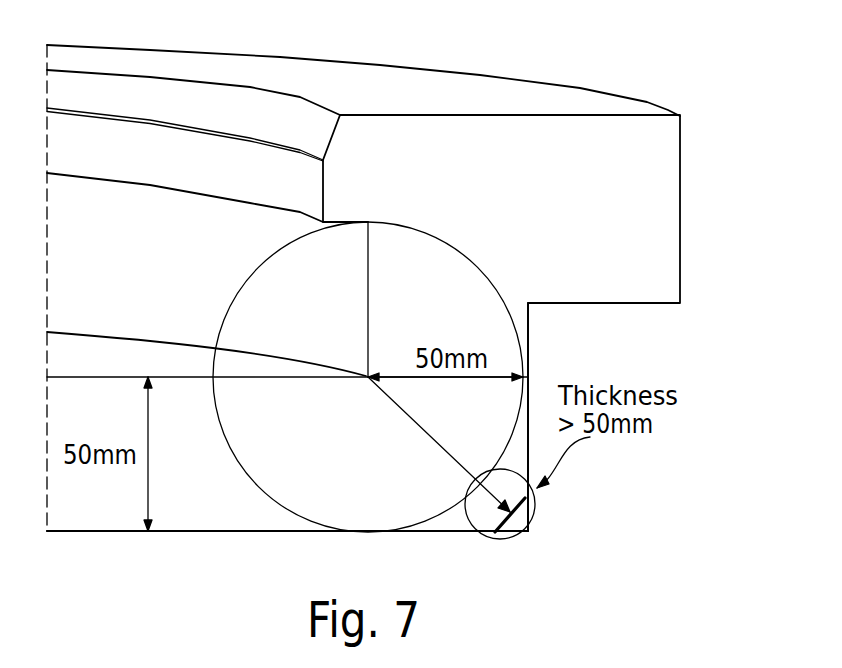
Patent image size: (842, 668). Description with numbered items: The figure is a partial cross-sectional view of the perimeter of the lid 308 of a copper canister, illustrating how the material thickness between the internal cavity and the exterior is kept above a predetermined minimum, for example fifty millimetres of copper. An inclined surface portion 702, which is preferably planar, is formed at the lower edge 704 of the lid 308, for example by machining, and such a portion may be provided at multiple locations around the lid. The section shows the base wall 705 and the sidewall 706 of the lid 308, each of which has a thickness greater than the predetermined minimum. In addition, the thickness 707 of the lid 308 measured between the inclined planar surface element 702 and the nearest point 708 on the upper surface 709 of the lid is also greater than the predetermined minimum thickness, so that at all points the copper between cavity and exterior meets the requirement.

The lid 308 is at (670, 216).
The inclined surface portion 702 is at (517, 537).
The lower edge 704 is at (520, 533).
The base wall 705 is at (238, 512).
The sidewall 706 is at (517, 357).
The thickness 707 is at (439, 444).
The nearest point 708 is at (366, 376).
The upper surface 709 is at (137, 375).